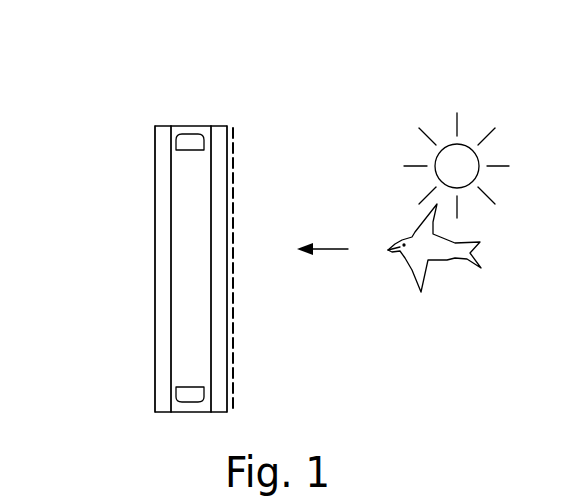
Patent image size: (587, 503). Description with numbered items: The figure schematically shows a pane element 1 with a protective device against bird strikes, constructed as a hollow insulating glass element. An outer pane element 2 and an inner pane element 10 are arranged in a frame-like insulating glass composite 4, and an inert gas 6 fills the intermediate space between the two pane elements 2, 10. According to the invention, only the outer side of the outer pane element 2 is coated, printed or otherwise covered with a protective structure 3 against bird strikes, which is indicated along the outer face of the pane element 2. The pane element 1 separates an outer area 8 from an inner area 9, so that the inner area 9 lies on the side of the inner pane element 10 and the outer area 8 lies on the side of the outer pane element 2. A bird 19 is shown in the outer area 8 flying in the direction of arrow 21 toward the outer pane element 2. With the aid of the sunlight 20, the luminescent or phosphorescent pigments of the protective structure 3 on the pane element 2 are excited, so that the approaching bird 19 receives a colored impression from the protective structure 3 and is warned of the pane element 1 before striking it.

The pane element 1 is at (251, 74).
The outer pane element 2 is at (226, 125).
The protective structure 3 is at (234, 190).
The insulating glass composite 4 is at (190, 133).
The inert gas 6 is at (187, 257).
The outer area 8 is at (384, 309).
The inner area 9 is at (42, 224).
The inner pane element 10 is at (165, 158).
The bird 19 is at (447, 255).
The sunlight 20 is at (462, 152).
The arrow 21 is at (328, 249).